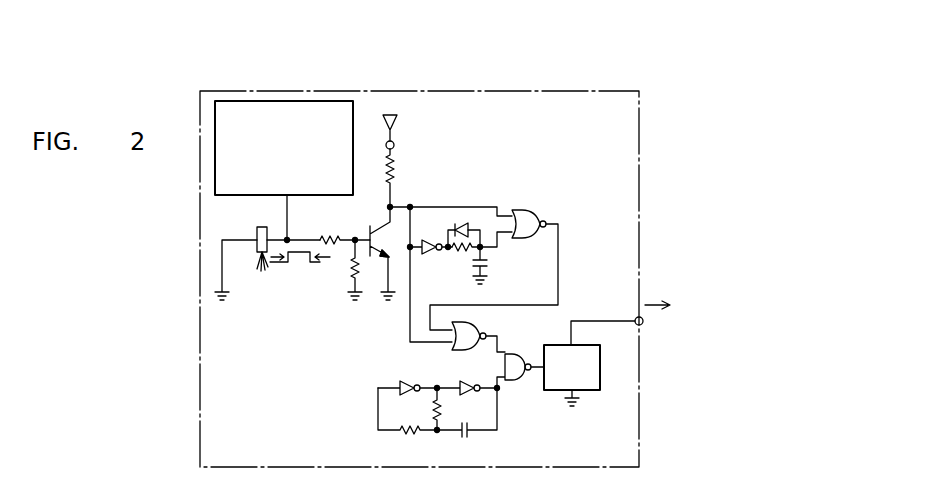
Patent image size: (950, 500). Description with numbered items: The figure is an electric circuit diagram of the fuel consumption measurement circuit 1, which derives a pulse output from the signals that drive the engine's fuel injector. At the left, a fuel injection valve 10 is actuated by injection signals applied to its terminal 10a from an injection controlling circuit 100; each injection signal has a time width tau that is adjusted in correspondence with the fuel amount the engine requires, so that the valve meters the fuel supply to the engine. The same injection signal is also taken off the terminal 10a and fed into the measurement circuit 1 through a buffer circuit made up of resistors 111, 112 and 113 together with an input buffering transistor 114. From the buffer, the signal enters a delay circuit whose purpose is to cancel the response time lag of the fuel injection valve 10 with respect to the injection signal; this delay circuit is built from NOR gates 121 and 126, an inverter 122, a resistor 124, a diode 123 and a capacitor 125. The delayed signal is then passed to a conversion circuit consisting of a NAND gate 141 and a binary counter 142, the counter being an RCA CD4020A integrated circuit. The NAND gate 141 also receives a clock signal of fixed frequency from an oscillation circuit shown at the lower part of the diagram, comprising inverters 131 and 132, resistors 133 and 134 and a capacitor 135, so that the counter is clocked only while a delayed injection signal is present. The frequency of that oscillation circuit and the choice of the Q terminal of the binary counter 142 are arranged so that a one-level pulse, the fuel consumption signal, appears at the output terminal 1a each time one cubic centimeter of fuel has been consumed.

The fuel consumption measurement circuit 1 is at (481, 90).
The terminal 1a is at (643, 324).
The fuel injection valve 10 is at (257, 233).
The terminal 10a is at (285, 237).
The injection controlling circuit 100 is at (258, 100).
The resistor 111 is at (333, 236).
The resistor 112 is at (352, 266).
The resistor 113 is at (401, 153).
The input buffering transistor 114 is at (392, 224).
The NOR gate 121 is at (528, 210).
The inverter 122 is at (431, 263).
The diode 123 is at (463, 224).
The resistor 124 is at (461, 254).
The capacitor 125 is at (488, 266).
The NOR gate 126 is at (476, 321).
The inverter 131 is at (398, 384).
The inverter 132 is at (463, 381).
The resistor 133 is at (402, 434).
The resistor 134 is at (436, 412).
The capacitor 135 is at (470, 438).
The NAND gate 141 is at (520, 353).
The binary counter 142 is at (601, 377).